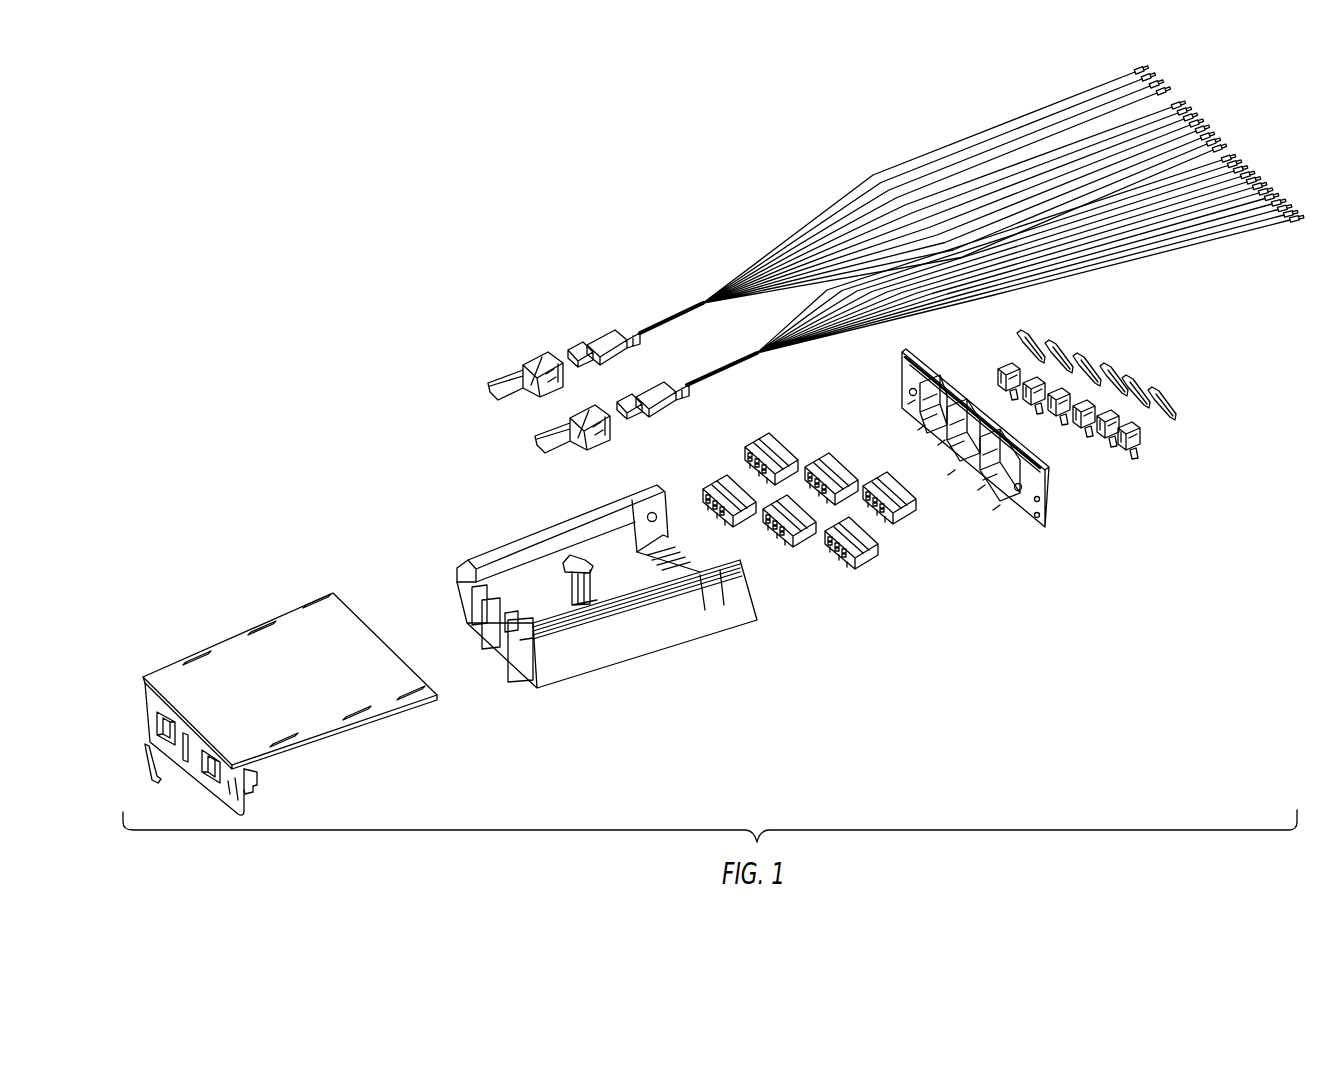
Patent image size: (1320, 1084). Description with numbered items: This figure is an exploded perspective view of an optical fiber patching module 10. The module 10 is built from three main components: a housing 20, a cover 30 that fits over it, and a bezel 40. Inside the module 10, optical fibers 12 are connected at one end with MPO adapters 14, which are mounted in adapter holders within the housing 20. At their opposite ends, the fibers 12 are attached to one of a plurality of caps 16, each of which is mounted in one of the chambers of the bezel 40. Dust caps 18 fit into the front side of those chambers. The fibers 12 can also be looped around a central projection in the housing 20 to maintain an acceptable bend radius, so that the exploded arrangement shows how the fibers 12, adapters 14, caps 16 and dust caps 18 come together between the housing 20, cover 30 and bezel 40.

The optical fiber patching module 10 is at (578, 760).
The optical fibers 12 is at (955, 141).
The MPO adapters 14 is at (543, 360).
The caps 16 is at (870, 562).
The dust caps 18 is at (1140, 447).
The housing 20 is at (657, 668).
The cover 30 is at (375, 764).
The bezel 40 is at (1045, 534).